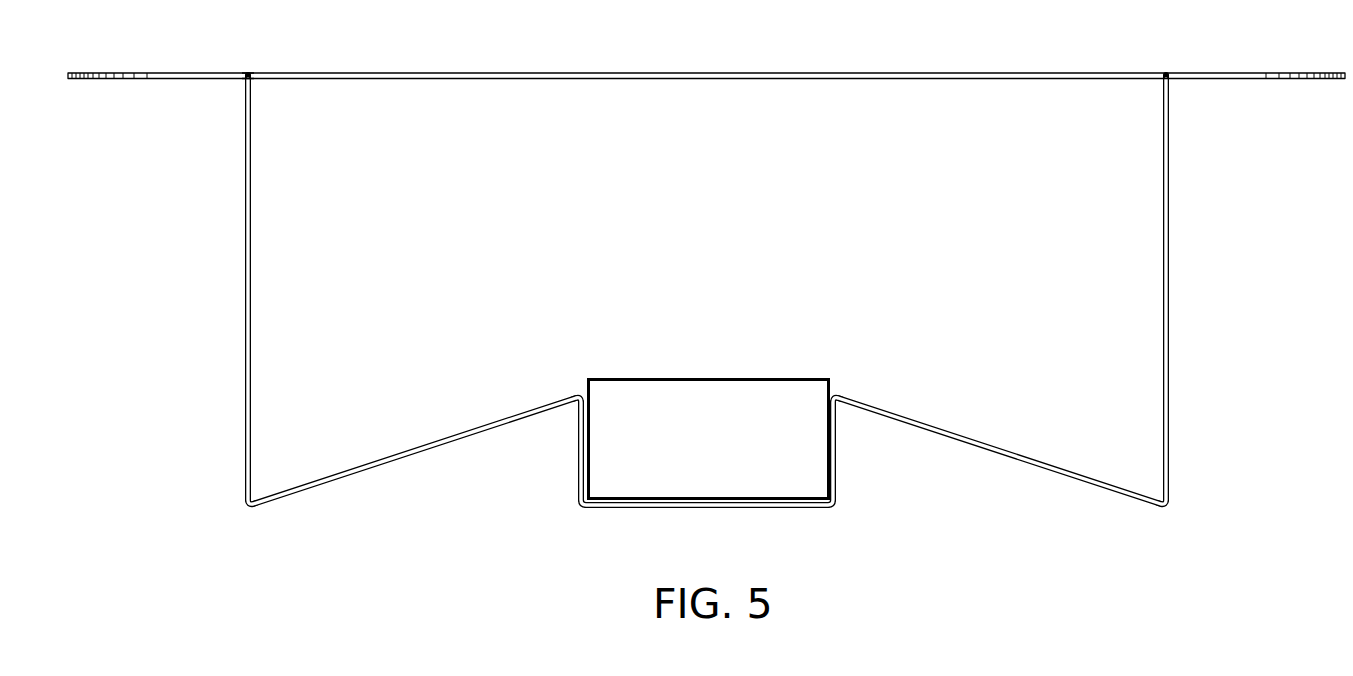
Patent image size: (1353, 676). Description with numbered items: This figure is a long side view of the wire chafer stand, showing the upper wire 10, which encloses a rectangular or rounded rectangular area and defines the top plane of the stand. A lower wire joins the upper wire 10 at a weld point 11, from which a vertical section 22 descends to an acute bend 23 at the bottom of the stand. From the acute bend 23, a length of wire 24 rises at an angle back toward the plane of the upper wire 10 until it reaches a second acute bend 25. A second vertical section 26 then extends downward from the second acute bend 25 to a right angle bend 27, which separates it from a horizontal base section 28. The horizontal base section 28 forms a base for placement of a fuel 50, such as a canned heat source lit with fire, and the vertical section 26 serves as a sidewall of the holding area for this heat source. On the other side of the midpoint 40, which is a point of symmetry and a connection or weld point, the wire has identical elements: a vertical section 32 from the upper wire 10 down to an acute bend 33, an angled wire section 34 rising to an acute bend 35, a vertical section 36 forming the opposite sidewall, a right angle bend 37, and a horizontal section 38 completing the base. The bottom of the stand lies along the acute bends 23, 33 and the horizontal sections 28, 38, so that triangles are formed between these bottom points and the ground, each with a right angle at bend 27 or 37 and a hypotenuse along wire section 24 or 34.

The upper wire 10 is at (358, 77).
The weld point 11 is at (245, 73).
The vertical section 22 is at (246, 284).
The acute bend 23 is at (257, 508).
The length of wire 24 is at (372, 462).
The second acute bend 25 is at (577, 393).
The second vertical section 26 is at (577, 465).
The right angle bend 27 is at (578, 507).
The horizontal base section 28 is at (657, 507).
The vertical section 32 is at (1165, 337).
The acute bend 33 is at (1163, 507).
The wire section 34 is at (1000, 447).
The acute bend 35 is at (840, 392).
The vertical section 36 is at (838, 448).
The right angle bend 37 is at (830, 510).
The horizontal section 38 is at (758, 508).
The midpoint 40 is at (703, 507).
The fuel 50 is at (705, 390).